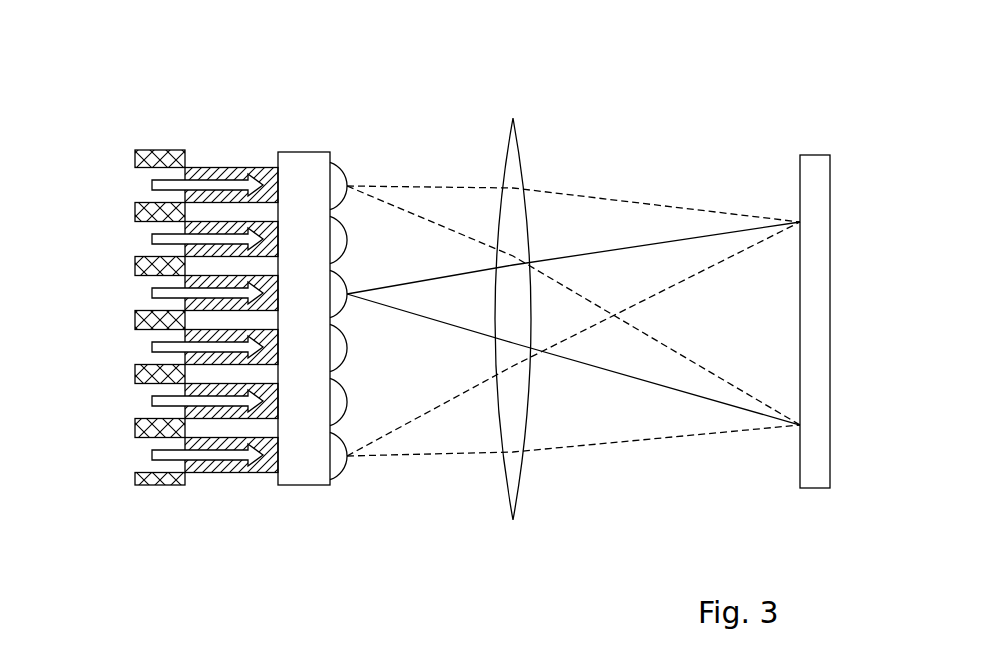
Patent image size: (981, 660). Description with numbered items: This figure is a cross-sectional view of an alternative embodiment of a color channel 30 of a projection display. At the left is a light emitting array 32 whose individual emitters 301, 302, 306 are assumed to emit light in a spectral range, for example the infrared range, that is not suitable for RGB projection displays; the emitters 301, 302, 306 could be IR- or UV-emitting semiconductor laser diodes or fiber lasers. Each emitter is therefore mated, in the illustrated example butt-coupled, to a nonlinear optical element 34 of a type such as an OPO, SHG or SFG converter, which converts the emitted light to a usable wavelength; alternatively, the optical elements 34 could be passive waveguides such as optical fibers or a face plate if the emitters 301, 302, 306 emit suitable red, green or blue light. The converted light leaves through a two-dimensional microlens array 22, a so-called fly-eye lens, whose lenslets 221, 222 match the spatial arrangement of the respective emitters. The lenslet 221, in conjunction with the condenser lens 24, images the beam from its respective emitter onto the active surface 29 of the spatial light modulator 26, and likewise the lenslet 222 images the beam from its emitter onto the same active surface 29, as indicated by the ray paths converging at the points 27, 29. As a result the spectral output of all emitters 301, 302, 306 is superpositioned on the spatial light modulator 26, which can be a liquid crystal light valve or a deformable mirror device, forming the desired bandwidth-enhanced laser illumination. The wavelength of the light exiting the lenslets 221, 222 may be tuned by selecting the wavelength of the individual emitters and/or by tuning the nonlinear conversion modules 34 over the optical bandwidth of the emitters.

The two-dimensional microlens array 22 is at (372, 328).
The lenslet 221 is at (340, 173).
The lenslet 222 is at (343, 247).
The condenser lens 24 is at (513, 120).
The spatial light modulator 26 is at (813, 158).
The light convergence point 27 is at (800, 222).
The active surface 29 is at (800, 425).
The color channel 30 is at (159, 341).
The lasing element 301 is at (133, 185).
The lasing element 302 is at (137, 243).
The lasing element 306 is at (138, 458).
The light emitting array 32 is at (168, 488).
The nonlinear optical element 34 is at (225, 177).